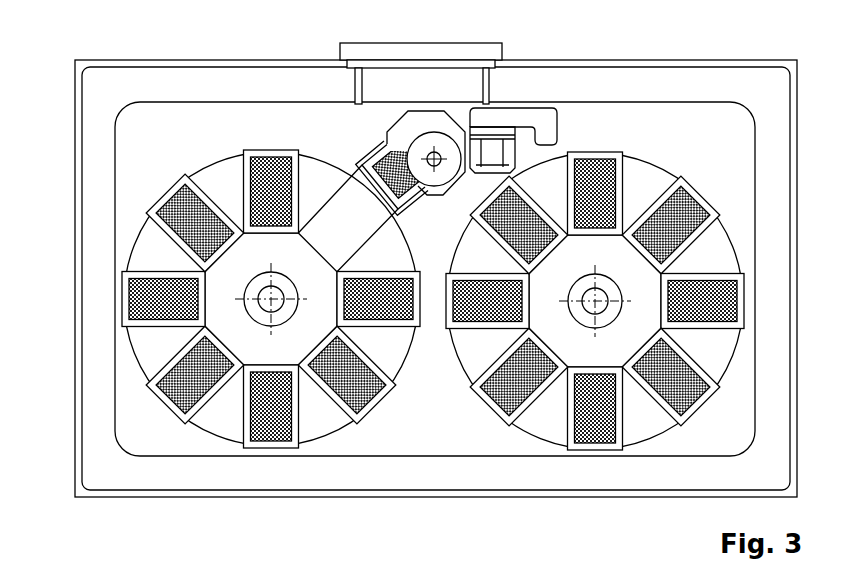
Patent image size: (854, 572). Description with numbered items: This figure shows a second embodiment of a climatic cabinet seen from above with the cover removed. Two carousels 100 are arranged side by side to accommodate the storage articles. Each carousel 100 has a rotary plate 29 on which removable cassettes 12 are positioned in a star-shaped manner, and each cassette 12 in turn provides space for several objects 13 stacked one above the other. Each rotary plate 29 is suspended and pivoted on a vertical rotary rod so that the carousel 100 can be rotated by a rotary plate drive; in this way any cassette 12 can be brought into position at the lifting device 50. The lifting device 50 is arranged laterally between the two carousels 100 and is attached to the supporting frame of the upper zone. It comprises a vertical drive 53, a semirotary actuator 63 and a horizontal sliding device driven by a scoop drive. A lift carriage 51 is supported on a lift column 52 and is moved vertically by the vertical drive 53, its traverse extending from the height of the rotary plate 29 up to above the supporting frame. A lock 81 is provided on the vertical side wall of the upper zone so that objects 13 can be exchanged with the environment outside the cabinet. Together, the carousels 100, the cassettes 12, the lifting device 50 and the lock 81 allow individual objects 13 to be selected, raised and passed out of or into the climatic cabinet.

The removable cassette 12 is at (133, 267).
The object 13 is at (374, 160).
The rotary plate 29 is at (148, 243).
The lifting device 50 is at (579, 138).
The lift carriage 51 is at (383, 137).
The lift column 52 is at (543, 113).
The vertical drive 53 is at (510, 148).
The semirotary actuator 63 is at (442, 145).
The lock 81 is at (410, 78).
The carousel 100 is at (208, 437).